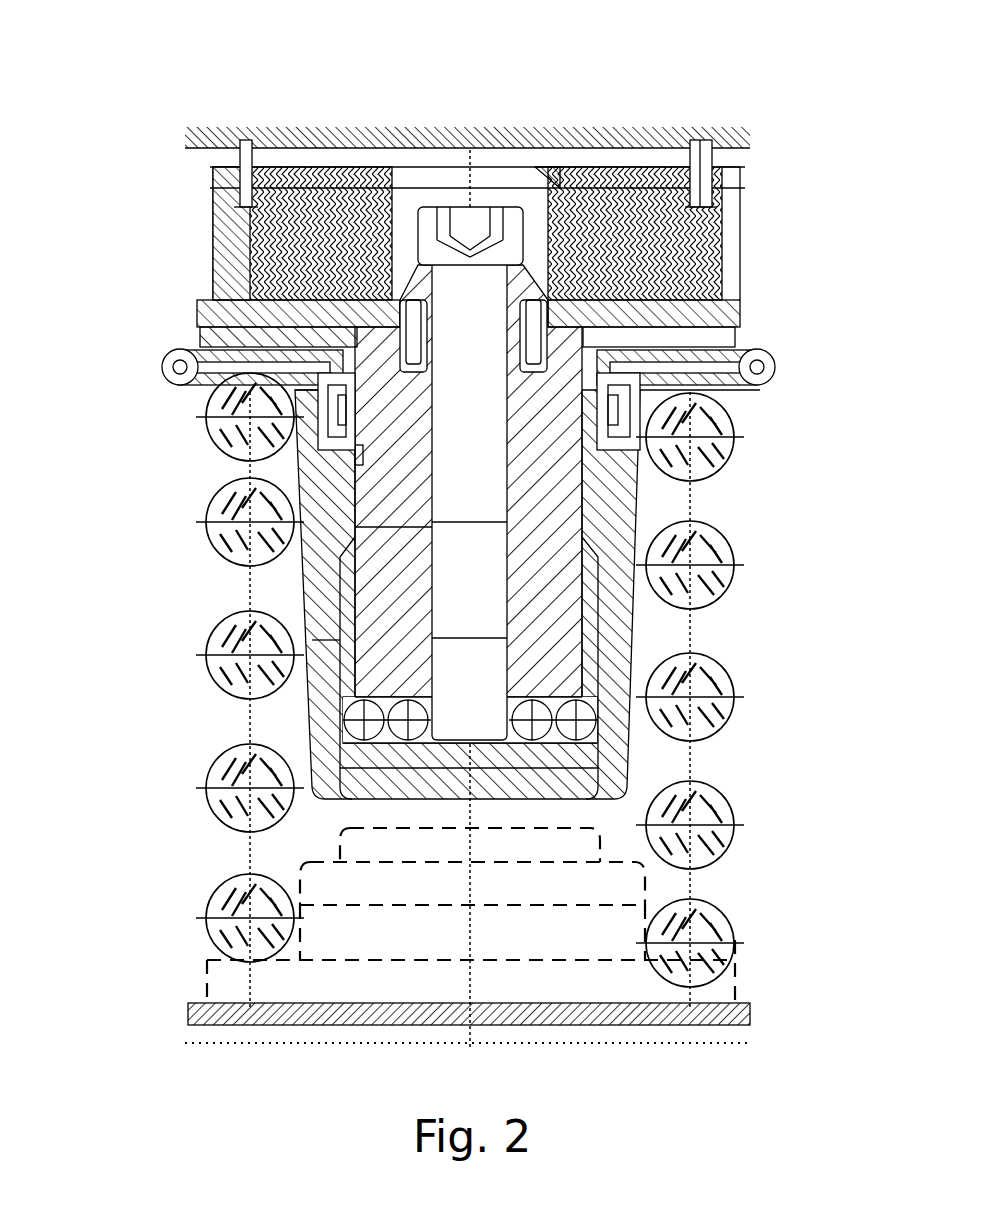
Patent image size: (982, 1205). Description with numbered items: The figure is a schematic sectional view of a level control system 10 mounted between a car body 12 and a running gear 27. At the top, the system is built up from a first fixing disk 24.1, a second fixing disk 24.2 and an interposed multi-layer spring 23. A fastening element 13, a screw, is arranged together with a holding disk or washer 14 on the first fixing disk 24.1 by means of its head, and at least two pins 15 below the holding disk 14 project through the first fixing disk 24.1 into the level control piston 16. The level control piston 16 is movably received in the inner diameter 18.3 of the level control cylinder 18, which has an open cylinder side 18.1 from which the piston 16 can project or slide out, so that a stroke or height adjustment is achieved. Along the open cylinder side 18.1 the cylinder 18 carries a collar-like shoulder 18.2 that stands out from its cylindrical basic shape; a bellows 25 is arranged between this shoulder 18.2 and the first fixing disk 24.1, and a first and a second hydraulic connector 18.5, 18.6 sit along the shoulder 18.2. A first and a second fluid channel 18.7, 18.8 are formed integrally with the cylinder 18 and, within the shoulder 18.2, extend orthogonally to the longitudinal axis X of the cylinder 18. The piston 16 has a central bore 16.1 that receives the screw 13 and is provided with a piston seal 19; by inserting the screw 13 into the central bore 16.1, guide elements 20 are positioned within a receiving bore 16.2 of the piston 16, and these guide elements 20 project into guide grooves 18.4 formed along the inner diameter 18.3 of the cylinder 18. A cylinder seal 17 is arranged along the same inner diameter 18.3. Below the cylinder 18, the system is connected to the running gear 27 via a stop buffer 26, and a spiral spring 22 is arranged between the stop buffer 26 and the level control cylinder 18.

The level control system 10 is at (186, 100).
The car body 12 is at (467, 119).
The fastening element 13 is at (560, 262).
The holding disk 14 is at (600, 290).
The pins 15 is at (560, 332).
The level control piston 16 is at (555, 492).
The central bore 16.1 is at (355, 527).
The receiving bore 16.2 is at (355, 657).
The cylinder seal 17 is at (433, 483).
The level control cylinder 18 is at (605, 465).
The open cylinder side 18.1 is at (600, 340).
The collar-like shoulder 18.2 is at (630, 442).
The inner diameter 18.3 is at (310, 545).
The guide grooves 18.4 is at (307, 603).
The first hydraulic connector 18.5 is at (162, 367).
The second hydraulic connector 18.6 is at (775, 368).
The first fluid channel 18.7 is at (318, 378).
The second fluid channel 18.8 is at (640, 400).
The piston seal 19 is at (575, 660).
The guide elements 20 is at (600, 730).
The spiral spring 22 is at (210, 893).
The multi-layer spring 23 is at (547, 210).
The first fixing disk 24.1 is at (240, 318).
The second fixing disk 24.2 is at (197, 183).
The bellows 25 is at (220, 333).
The stop buffer 26 is at (613, 880).
The running gear 27 is at (680, 1017).
The longitudinal axis X is at (700, 830).